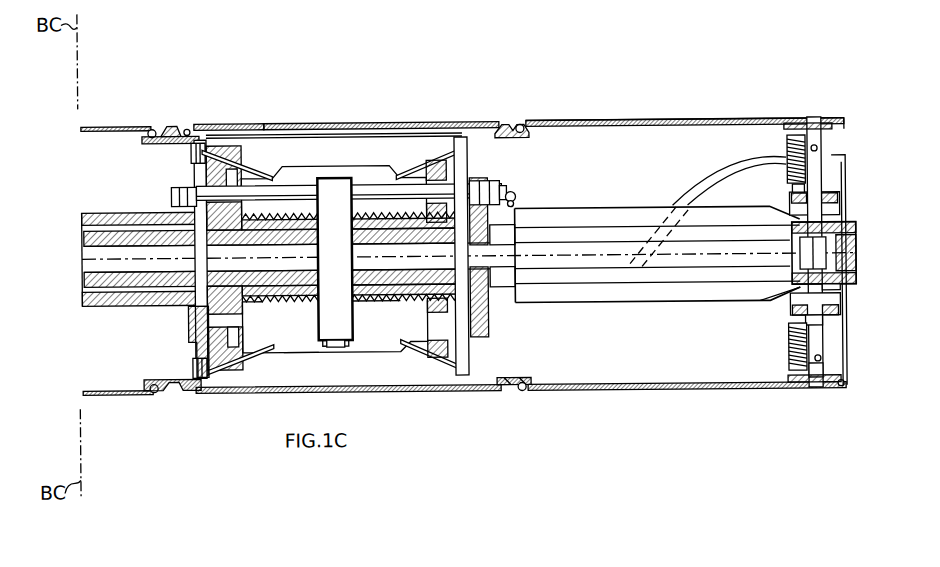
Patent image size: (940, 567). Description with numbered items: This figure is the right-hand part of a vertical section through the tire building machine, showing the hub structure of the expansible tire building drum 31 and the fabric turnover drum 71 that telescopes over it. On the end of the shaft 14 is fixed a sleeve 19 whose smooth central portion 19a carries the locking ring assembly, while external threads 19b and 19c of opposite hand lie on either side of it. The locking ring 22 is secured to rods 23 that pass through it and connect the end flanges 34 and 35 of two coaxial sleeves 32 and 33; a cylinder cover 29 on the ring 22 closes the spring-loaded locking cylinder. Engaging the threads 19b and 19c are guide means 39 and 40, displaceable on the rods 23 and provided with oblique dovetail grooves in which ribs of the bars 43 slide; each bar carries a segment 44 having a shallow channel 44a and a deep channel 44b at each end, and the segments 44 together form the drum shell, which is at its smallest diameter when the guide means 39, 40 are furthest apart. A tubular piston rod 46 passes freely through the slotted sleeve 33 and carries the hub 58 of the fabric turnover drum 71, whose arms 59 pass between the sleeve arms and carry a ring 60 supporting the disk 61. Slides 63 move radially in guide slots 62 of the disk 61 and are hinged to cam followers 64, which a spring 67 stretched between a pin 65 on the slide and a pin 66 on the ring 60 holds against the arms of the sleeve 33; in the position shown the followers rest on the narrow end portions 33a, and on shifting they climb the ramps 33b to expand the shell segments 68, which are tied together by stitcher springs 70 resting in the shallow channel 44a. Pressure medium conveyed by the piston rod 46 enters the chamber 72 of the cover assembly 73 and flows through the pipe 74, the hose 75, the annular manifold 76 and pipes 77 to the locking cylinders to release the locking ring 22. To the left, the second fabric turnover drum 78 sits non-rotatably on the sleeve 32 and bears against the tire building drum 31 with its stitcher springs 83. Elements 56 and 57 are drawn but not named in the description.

The shaft 14 is at (84, 236).
The sleeve 19 is at (258, 225).
The central portion 19a is at (306, 300).
The external thread 19b is at (256, 300).
The external thread 19c is at (373, 305).
The locking ring 22 is at (340, 181).
The rod 23 is at (306, 194).
The cylinder cover 29 is at (336, 339).
The tire building drum 31 is at (354, 122).
The sleeve 32 is at (112, 209).
The sleeve 33 is at (552, 210).
The narrow end portion 33a is at (843, 215).
The inclined portion or ramp 33b is at (773, 295).
The end flange 34 is at (190, 324).
The end flange 35 is at (488, 333).
The guide means 39 is at (245, 185).
The guide means 40 is at (463, 158).
The bar 43 is at (288, 136).
The segment 44 is at (238, 123).
The shallow channel 44a is at (166, 125).
The deep channel 44b is at (186, 125).
The piston rod 46 is at (672, 264).
The flange 56 is at (458, 330).
The retainer 57 is at (843, 290).
The hub 58 is at (845, 226).
The arm 59 is at (843, 303).
The ring 60 is at (830, 321).
The disk 61 is at (826, 345).
The guide slot 62 is at (822, 369).
The slide 63 is at (838, 392).
The cam follower 64 is at (790, 355).
The pin 65 is at (803, 130).
The pin 66 is at (792, 193).
The spring 67 is at (787, 153).
The sheet metal segment 68 is at (665, 122).
The stitcher spring 70 is at (523, 126).
The fabric turnover drum 71 is at (718, 122).
The chamber 72 is at (856, 247).
The cover assembly 73 is at (855, 269).
The pipe 74 is at (846, 185).
The hose 75 is at (693, 197).
The annular manifold 76 is at (514, 196).
The pipe 77 is at (405, 323).
The fabric turnover drum 78 is at (93, 125).
The stitcher spring 83 is at (153, 124).